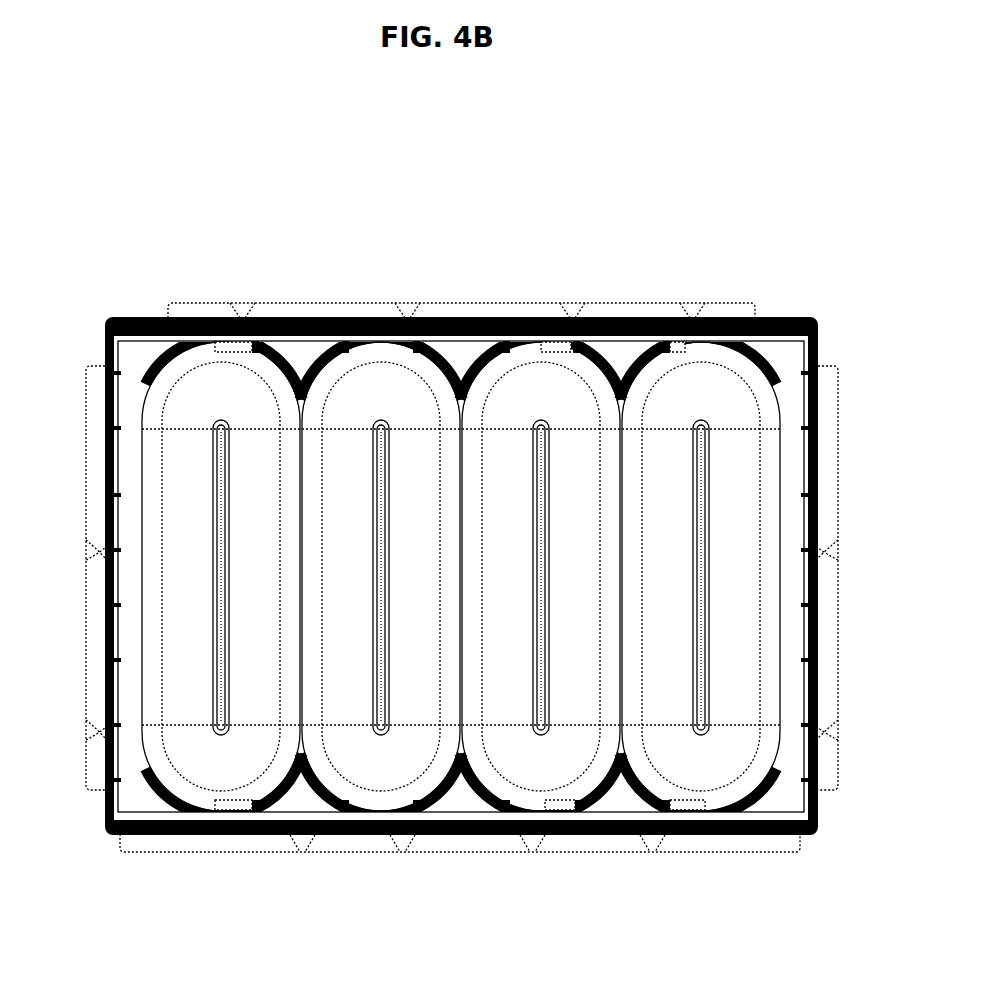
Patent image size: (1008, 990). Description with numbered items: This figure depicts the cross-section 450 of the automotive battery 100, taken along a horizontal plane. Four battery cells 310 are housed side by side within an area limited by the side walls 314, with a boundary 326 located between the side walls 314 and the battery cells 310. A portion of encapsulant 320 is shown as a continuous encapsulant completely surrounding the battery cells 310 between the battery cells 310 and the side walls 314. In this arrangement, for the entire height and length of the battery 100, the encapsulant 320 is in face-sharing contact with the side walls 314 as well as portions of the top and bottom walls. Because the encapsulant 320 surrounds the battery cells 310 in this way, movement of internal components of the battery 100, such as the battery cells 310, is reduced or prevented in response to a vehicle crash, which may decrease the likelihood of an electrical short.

The automotive battery 100 is at (572, 192).
The cross-section 450 is at (742, 192).
The side walls 314 is at (135, 318).
The encapsulant 320 is at (128, 362).
The battery cells 310 is at (290, 623).
The boundary 326 is at (803, 755).